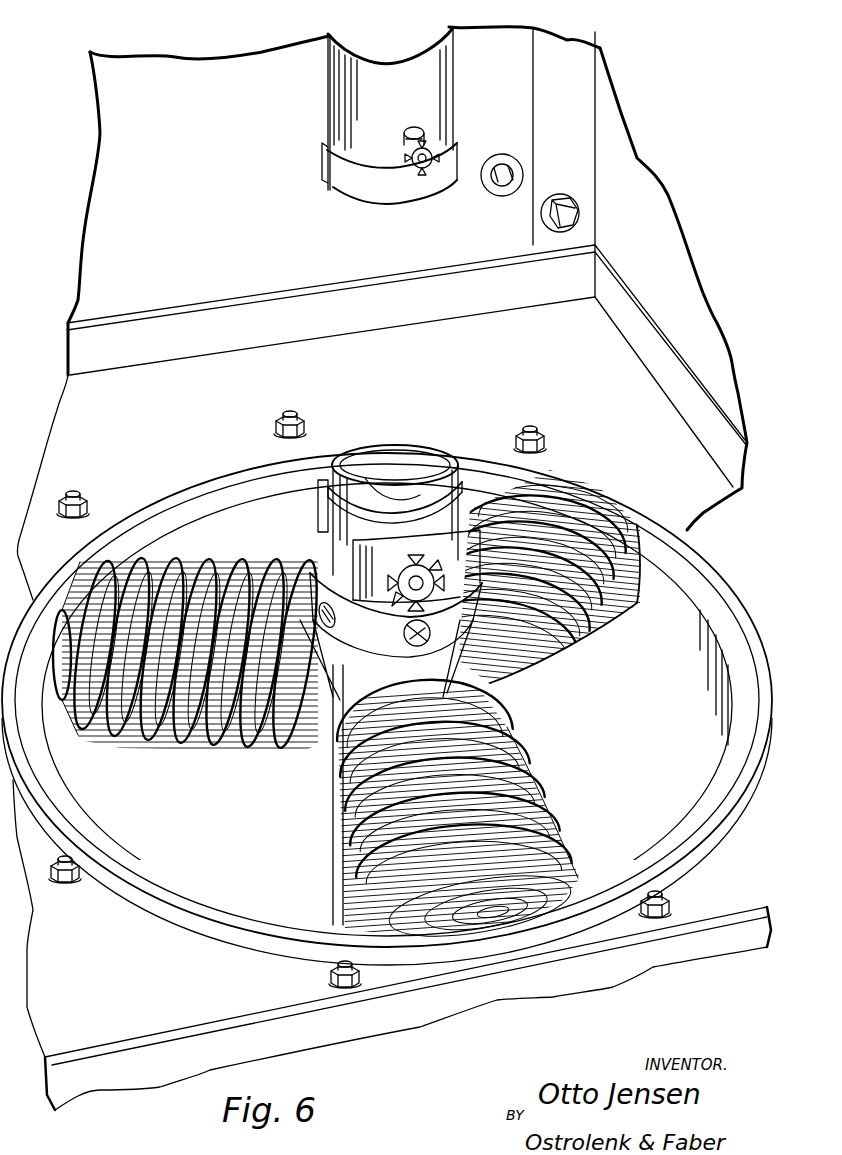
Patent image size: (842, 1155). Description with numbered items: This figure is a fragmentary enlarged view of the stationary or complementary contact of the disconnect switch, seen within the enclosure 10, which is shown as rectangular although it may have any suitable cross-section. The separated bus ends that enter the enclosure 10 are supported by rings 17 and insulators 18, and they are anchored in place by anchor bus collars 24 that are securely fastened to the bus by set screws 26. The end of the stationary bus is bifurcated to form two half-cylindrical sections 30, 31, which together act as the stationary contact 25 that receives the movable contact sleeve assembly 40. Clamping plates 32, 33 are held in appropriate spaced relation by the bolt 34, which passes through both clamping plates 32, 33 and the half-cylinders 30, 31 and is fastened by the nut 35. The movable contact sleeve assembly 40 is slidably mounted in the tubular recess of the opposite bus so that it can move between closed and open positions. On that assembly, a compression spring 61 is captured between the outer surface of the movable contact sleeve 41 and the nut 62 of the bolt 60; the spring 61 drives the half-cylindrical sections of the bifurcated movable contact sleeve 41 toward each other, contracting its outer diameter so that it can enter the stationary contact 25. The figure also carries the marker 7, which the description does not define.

The enclosure 10 is at (595, 384).
The rings 17 is at (655, 572).
The insulators 18 is at (585, 492).
The anchor bus collars 24 is at (420, 680).
The stationary contact 25 is at (464, 432).
The set screws 26 is at (333, 630).
The half-cylindrical section 30 is at (345, 510).
The half-cylindrical section 31 is at (410, 433).
The clamping plate 32 is at (392, 580).
The clamping plate 33 is at (330, 490).
The bolt 34 is at (429, 630).
The nut 35 is at (393, 586).
The movable contact sleeve assembly 40 is at (297, 129).
The movable contact sleeve 41 is at (443, 70).
The bolt 60 is at (437, 168).
The compression spring 61 is at (412, 128).
The nut 62 is at (433, 156).
The section line 7- 7 is at (407, 345).